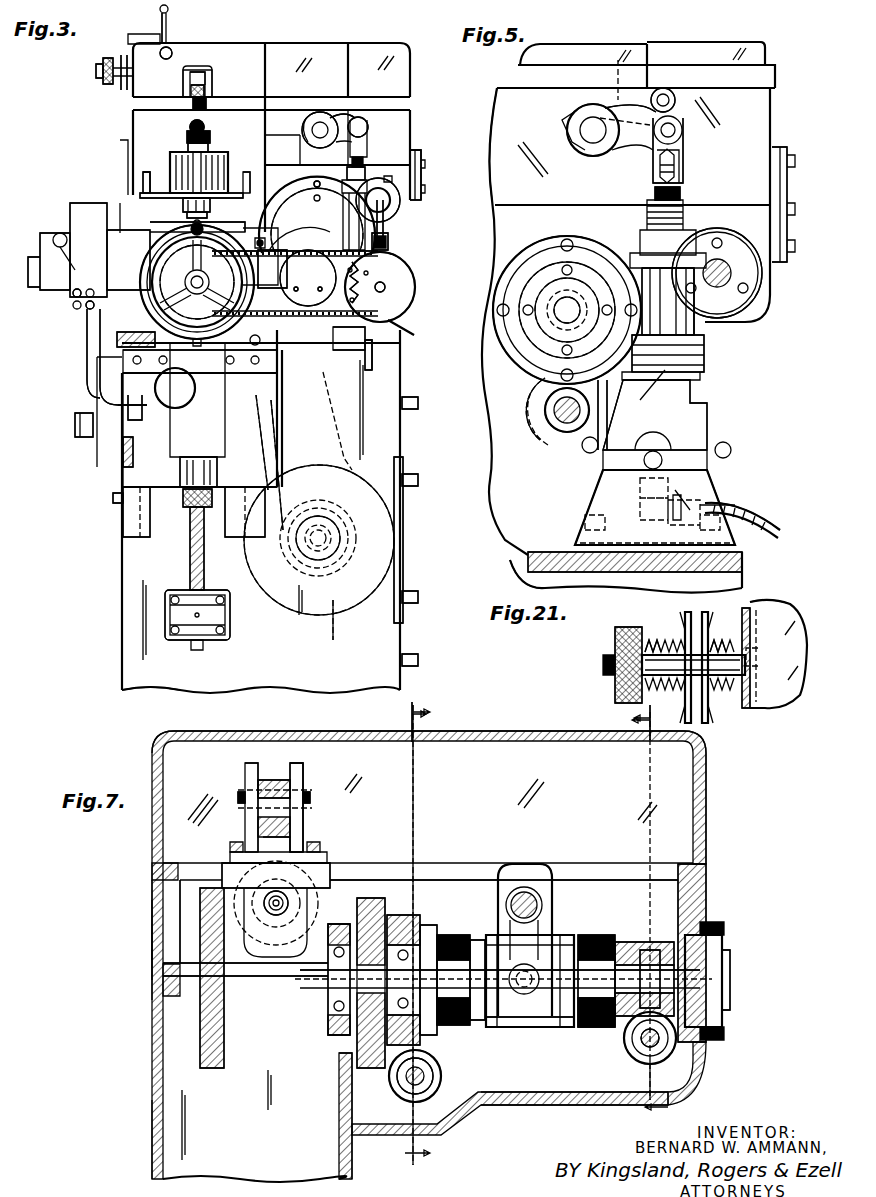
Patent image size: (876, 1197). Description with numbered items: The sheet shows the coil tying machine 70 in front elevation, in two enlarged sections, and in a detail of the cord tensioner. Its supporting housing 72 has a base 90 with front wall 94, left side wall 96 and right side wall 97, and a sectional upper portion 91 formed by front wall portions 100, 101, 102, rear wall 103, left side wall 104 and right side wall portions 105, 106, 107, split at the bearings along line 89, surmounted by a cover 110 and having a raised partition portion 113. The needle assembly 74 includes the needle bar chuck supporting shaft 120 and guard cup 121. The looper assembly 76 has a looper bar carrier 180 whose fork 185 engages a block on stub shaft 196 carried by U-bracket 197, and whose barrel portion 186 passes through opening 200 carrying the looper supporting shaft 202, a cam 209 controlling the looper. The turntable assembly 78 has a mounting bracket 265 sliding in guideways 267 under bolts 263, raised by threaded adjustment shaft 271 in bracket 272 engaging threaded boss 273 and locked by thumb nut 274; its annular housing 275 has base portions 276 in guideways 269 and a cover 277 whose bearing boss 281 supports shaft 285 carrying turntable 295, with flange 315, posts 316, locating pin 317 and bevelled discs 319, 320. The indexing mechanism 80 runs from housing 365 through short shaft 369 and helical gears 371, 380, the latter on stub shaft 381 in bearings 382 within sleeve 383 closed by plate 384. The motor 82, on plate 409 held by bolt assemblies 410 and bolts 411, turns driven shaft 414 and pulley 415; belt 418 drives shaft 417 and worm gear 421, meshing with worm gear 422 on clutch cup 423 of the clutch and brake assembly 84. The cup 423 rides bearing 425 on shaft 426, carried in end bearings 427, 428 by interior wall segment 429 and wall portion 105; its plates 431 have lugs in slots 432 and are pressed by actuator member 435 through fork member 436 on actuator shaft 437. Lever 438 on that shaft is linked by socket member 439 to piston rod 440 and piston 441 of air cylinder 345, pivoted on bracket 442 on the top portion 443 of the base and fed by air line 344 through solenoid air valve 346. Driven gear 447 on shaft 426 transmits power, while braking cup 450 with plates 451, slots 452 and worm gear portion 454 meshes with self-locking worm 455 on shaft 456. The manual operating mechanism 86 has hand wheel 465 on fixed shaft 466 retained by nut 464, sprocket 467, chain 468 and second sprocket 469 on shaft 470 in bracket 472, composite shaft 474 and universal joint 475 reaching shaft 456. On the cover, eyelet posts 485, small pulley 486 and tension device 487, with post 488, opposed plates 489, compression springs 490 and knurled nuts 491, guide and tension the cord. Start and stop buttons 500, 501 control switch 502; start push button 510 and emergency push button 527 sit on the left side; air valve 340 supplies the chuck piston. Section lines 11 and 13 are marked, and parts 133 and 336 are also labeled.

In FIG. 3, the machine 70 is at (103, 660).
In FIG. 5, the machine 70 is at (782, 60).
In FIG. 7, the machine 70 is at (120, 918).
In FIG. 3, the base frame 72 is at (118, 685).
In FIG. 7, the base frame 72 is at (150, 1163).
In FIG. 3, the knob 74 is at (205, 127).
In FIG. 3, the clamp member 76 is at (183, 113).
In FIG. 7, the clamp member 76 is at (306, 780).
In FIG. 3, the shelf 78 is at (140, 228).
In FIG. 3, the gear 80 is at (380, 287).
In FIG. 3, the belt 82 is at (333, 640).
In FIG. 7, the bottom wall 84 is at (500, 1050).
In FIG. 3, the bracket 86 is at (127, 343).
In FIG. 3, the plate 89 is at (418, 163).
In FIG. 5, the plate 89 is at (770, 207).
In FIG. 7, the plate 89 is at (165, 975).
In FIG. 3, the housing wall 90 is at (404, 345).
In FIG. 5, the housing wall 90 is at (525, 576).
In FIG. 3, the side wall 91 is at (414, 117).
In FIG. 5, the side wall 91 is at (774, 120).
In FIG. 7, the side wall 91 is at (148, 940).
In FIG. 3, the bottom edge 94 is at (160, 690).
In FIG. 3, the corner 96 is at (120, 695).
In FIG. 3, the corner 97 is at (402, 686).
In FIG. 3, the cover section 100 is at (253, 115).
In FIG. 3, the housing section 101 is at (270, 115).
In FIG. 5, the housing section 101 is at (515, 175).
In FIG. 3, the housing section 102 is at (390, 110).
In FIG. 5, the housing section 102 is at (752, 222).
In FIG. 7, the inner wall 103 is at (176, 950).
In FIG. 3, the side wall 104 is at (133, 115).
In FIG. 7, the side wall 104 is at (152, 900).
In FIG. 3, the end wall 105 is at (421, 140).
In FIG. 5, the end wall 105 is at (770, 103).
In FIG. 7, the end wall 105 is at (706, 910).
In FIG. 3, the pivot 106 is at (350, 110).
In FIG. 5, the pivot 106 is at (675, 100).
In FIG. 3, the partition 107 is at (268, 122).
In FIG. 3, the cover 110 is at (362, 52).
In FIG. 5, the cover 110 is at (705, 52).
In FIG. 21, the cover 110 is at (762, 710).
In FIG. 7, the cover 110 is at (700, 808).
In FIG. 7, the bottom wall 113 is at (582, 1105).
In FIG. 3, the bearing 120 is at (191, 125).
In FIG. 7, the bearing 120 is at (276, 916).
In FIG. 7, the bearing block 121 is at (262, 888).
In FIG. 3, the bracket 133 is at (118, 150).
In FIG. 7, the clamp 180 is at (266, 763).
In FIG. 7, the pin 185 is at (275, 785).
In FIG. 3, the post 186 is at (210, 85).
In FIG. 7, the bolt 196 is at (312, 796).
In FIG. 7, the bolt 197 is at (238, 792).
In FIG. 3, the post 200 is at (198, 66).
In FIG. 3, the bushing 202 is at (188, 92).
In FIG. 7, the partition plate 209 is at (200, 1035).
In FIG. 3, the bolt 263 is at (113, 499).
In FIG. 3, the block 265 is at (125, 478).
In FIG. 3, the leg 267 is at (145, 537).
In FIG. 3, the plate 269 is at (192, 362).
In FIG. 3, the screw 271 is at (190, 565).
In FIG. 3, the foot plate 272 is at (165, 617).
In FIG. 3, the knurled nut 273 is at (217, 474).
In FIG. 3, the lock nut 274 is at (183, 497).
In FIG. 3, the screw 275 is at (308, 286).
In FIG. 3, the conduit 276 is at (100, 360).
In FIG. 3, the block 277 is at (128, 240).
In FIG. 3, the bracket 281 is at (183, 210).
In FIG. 3, the bracket 285 is at (210, 208).
In FIG. 3, the post 295 is at (140, 180).
In FIG. 3, the plate 315 is at (245, 194).
In FIG. 3, the post 316 is at (142, 180).
In FIG. 3, the solenoid 317 is at (190, 172).
In FIG. 3, the nut 319 is at (210, 137).
In FIG. 3, the collar 320 is at (208, 147).
In FIG. 3, the opening 336 is at (176, 410).
In FIG. 3, the block 340 is at (85, 265).
In FIG. 3, the hose 344 is at (414, 334).
In FIG. 5, the hose 344 is at (772, 522).
In FIG. 3, the fitting 345 is at (390, 222).
In FIG. 5, the fitting 345 is at (700, 335).
In FIG. 5, the bracket 346 is at (690, 427).
In FIG. 3, the screw 365 is at (318, 192).
In FIG. 5, the shaft end 369 is at (565, 425).
In FIG. 5, the boss 371 is at (540, 455).
In FIG. 5, the lug 380 is at (540, 370).
In FIG. 5, the ring 381 is at (560, 278).
In FIG. 5, the hub 382 is at (578, 298).
In FIG. 3, the disc 383 is at (306, 206).
In FIG. 5, the disc 383 is at (550, 240).
In FIG. 3, the ring 384 is at (326, 208).
In FIG. 5, the ring 384 is at (538, 278).
In FIG. 3, the rail 409 is at (404, 455).
In FIG. 3, the bolt 410 is at (418, 596).
In FIG. 3, the bolt 411 is at (418, 660).
In FIG. 3, the pulley 414 is at (318, 528).
In FIG. 3, the pulley 415 is at (268, 552).
In FIG. 7, the shaft 417 is at (415, 1076).
In FIG. 3, the belt 418 is at (274, 438).
In FIG. 7, the bearing boss 421 is at (400, 1098).
In FIG. 7, the gear 422 is at (397, 918).
In FIG. 7, the gear 423 is at (426, 924).
In FIG. 7, the plate 425 is at (395, 880).
In FIG. 7, the shaft 426 is at (730, 980).
In FIG. 7, the bearing 427 is at (330, 1005).
In FIG. 7, the flange 428 is at (724, 1000).
In FIG. 7, the wall 429 is at (339, 1090).
In FIG. 7, the sleeve 431 is at (500, 1020).
In FIG. 7, the bearing 432 is at (455, 935).
In FIG. 7, the cap 435 is at (488, 932).
In FIG. 7, the cylinder 436 is at (545, 942).
In FIG. 3, the clevis 437 is at (321, 112).
In FIG. 5, the clevis 437 is at (580, 125).
In FIG. 7, the clevis 437 is at (538, 880).
In FIG. 3, the arm 438 is at (340, 135).
In FIG. 5, the arm 438 is at (620, 100).
In FIG. 3, the piston rod 439 is at (368, 132).
In FIG. 5, the piston rod 439 is at (685, 160).
In FIG. 3, the cylinder 440 is at (368, 162).
In FIG. 5, the cylinder 440 is at (668, 335).
In FIG. 5, the flange 441 is at (700, 352).
In FIG. 3, the pedestal 442 is at (358, 350).
In FIG. 5, the pedestal 442 is at (700, 490).
In FIG. 3, the plate 443 is at (388, 340).
In FIG. 5, the plate 443 is at (744, 563).
In FIG. 7, the gear 447 is at (360, 908).
In FIG. 7, the bearing 450 is at (612, 944).
In FIG. 7, the bearing 451 is at (585, 1025).
In FIG. 7, the bearing 452 is at (595, 935).
In FIG. 7, the sleeve 454 is at (650, 950).
In FIG. 7, the boss 455 is at (676, 1040).
In FIG. 5, the shaft 456 is at (735, 283).
In FIG. 7, the shaft 456 is at (642, 1048).
In FIG. 3, the disc 464 is at (308, 278).
In FIG. 3, the ring 465 is at (160, 300).
In FIG. 3, the block 466 is at (258, 300).
In FIG. 3, the handwheel 467 is at (175, 281).
In FIG. 3, the chain 468 is at (400, 262).
In FIG. 3, the cam 469 is at (392, 288).
In FIG. 3, the hub 470 is at (375, 292).
In FIG. 3, the plate 472 is at (340, 335).
In FIG. 3, the bracket 474 is at (370, 262).
In FIG. 3, the fitting 475 is at (400, 200).
In FIG. 3, the bolt 485 is at (168, 50).
In FIG. 3, the lever 486 is at (158, 14).
In FIG. 3, the knob assembly 487 is at (98, 82).
In FIG. 21, the knob assembly 487 is at (600, 680).
In FIG. 3, the plate 488 is at (125, 86).
In FIG. 21, the plate 488 is at (750, 700).
In FIG. 3, the disc 489 is at (122, 60).
In FIG. 21, the disc 489 is at (706, 712).
In FIG. 21, the spring 490 is at (715, 650).
In FIG. 3, the knob 491 is at (100, 70).
In FIG. 21, the knob 491 is at (628, 632).
In FIG. 3, the fitting 500 is at (100, 400).
In FIG. 3, the knob 501 is at (78, 432).
In FIG. 3, the block 502 is at (103, 445).
In FIG. 3, the valve 510 is at (40, 240).
In FIG. 3, the terminals 527 is at (72, 300).
In FIG. 21, the section line 11 is at (612, 722).
In FIG. 7, the section line 11 is at (663, 1087).
In FIG. 3, the section line 13 is at (399, 722).
In FIG. 7, the section line 13 is at (411, 936).